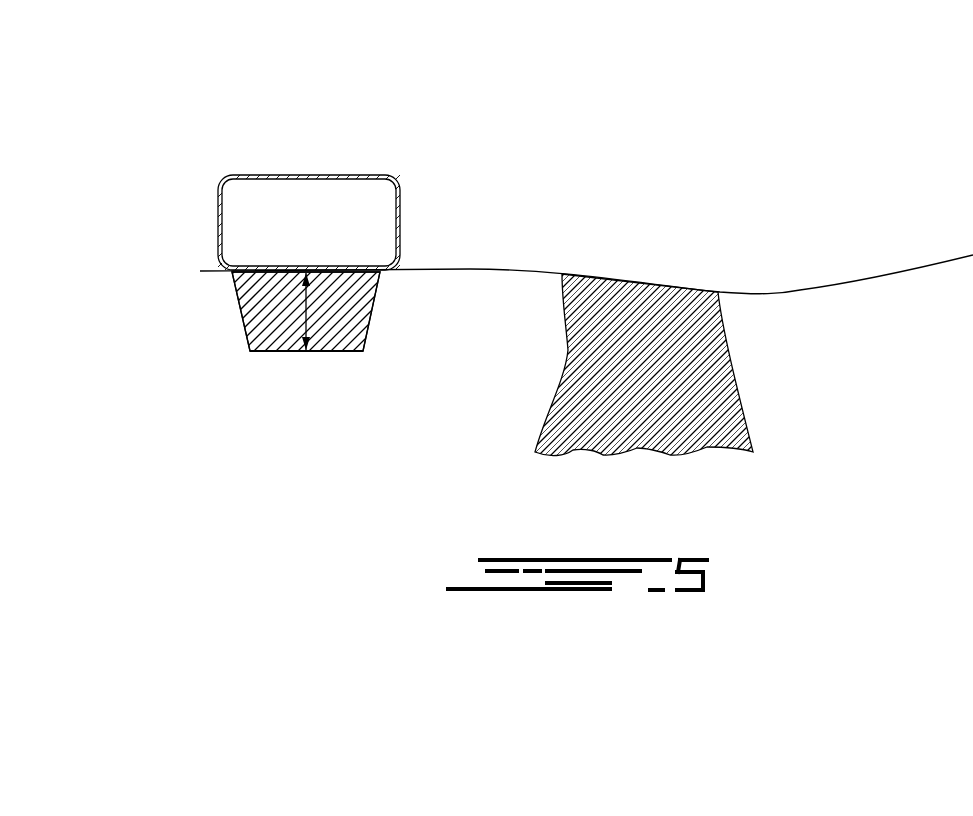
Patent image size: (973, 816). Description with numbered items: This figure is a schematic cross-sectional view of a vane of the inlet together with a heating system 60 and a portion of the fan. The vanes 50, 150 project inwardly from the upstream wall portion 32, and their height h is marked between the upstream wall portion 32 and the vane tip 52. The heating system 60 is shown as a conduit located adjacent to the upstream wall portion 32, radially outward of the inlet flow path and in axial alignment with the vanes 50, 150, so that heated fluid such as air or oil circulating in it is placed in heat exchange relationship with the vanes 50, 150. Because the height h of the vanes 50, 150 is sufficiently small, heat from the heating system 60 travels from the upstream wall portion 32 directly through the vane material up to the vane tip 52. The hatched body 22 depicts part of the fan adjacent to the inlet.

The body / substrate 22 is at (680, 348).
The outer surface 32 is at (470, 262).
The protrusion 50 is at (231, 310).
The protrusion 150 is at (306, 311).
The distal surface of protrusion 52 is at (287, 352).
The tubular member 60 is at (374, 162).
The height of protrusion h is at (308, 310).